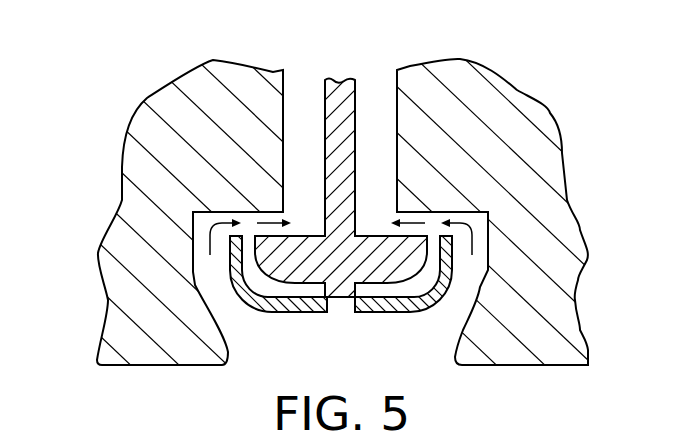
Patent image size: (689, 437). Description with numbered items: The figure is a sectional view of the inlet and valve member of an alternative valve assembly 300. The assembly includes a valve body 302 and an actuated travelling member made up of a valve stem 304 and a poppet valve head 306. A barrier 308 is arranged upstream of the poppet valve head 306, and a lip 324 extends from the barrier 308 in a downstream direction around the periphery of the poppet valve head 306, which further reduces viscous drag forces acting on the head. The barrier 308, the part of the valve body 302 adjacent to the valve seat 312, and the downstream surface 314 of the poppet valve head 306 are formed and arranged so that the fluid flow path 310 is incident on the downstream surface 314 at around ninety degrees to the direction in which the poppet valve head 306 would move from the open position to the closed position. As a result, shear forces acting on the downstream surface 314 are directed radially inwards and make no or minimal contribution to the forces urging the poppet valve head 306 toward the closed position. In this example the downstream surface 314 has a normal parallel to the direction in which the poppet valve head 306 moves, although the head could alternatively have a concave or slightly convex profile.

The sealing assembly 300 is at (108, 89).
The valve body 302 is at (506, 143).
The valve stem 304 is at (338, 80).
The poppet valve head 306 is at (457, 286).
The barrier 308 is at (407, 306).
The fluid flow path 310 is at (225, 256).
The valve seat 312 is at (222, 212).
The downstream surface 314 is at (322, 300).
The lip 324 is at (233, 262).